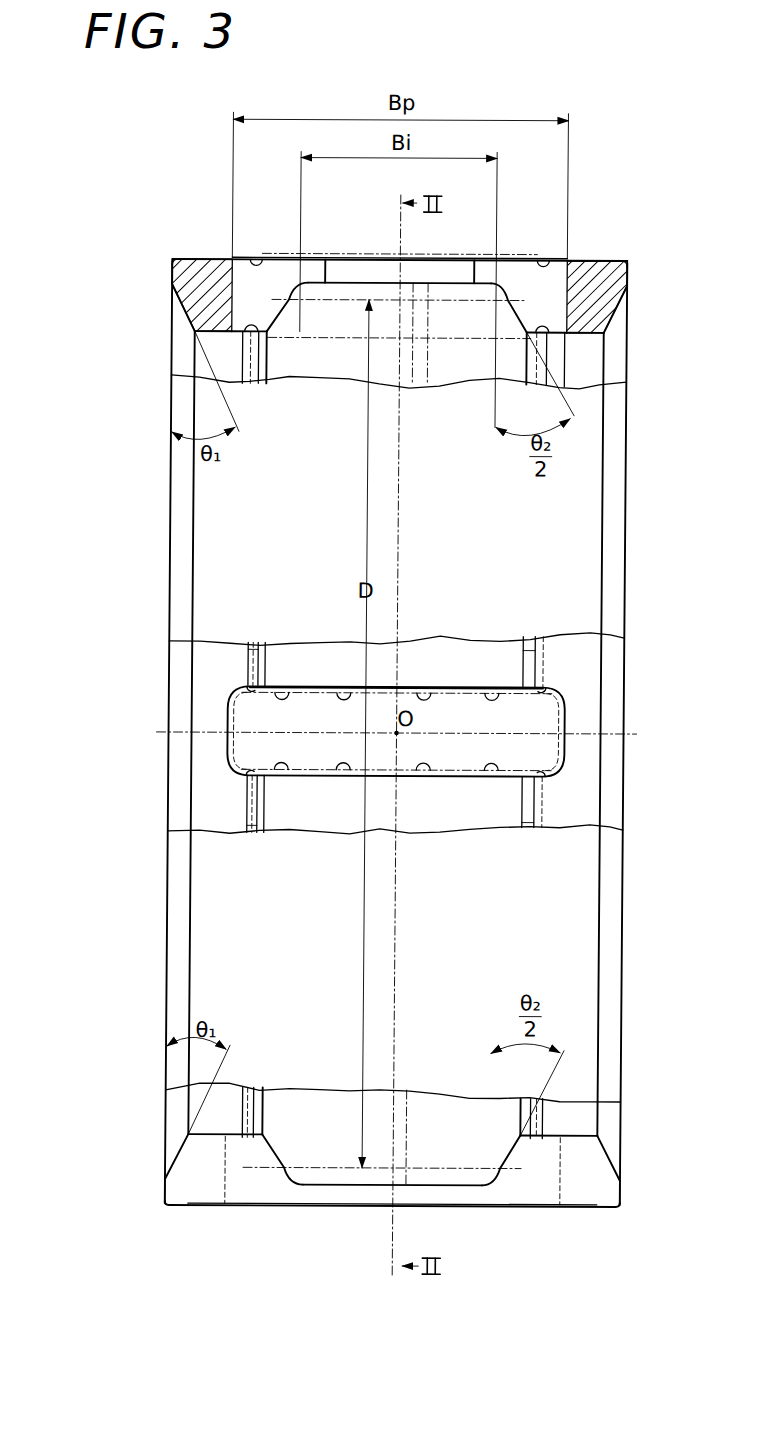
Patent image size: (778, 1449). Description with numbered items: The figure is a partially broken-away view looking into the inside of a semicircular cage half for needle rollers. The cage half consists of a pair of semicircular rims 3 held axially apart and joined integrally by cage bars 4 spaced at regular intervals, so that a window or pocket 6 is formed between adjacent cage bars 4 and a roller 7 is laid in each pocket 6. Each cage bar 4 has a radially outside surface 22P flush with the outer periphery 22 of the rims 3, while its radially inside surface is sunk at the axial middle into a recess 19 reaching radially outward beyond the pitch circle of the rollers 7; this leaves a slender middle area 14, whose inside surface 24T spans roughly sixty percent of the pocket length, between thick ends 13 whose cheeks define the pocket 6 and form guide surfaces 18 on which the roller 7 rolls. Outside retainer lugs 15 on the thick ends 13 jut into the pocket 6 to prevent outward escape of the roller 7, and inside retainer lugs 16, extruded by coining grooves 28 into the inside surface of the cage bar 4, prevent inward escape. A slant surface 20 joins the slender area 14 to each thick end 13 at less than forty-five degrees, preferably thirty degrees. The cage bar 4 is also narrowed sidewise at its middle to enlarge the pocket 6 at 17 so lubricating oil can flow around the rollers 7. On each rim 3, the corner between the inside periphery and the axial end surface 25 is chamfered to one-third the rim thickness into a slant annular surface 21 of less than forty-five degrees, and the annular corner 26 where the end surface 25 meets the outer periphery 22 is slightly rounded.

The semicircular rim 3 is at (205, 295).
The cage bar 4 is at (572, 338).
The pocket 6 is at (481, 270).
The roller 7 is at (330, 380).
The thick end 13 is at (226, 338).
The slender area 14 is at (341, 276).
The outside retainer lug 15 is at (256, 258).
The inside retainer lug 16 is at (252, 345).
The widthwise enlargement of the pocket 17 is at (354, 300).
The guide surface 18 is at (264, 682).
The recess 19 is at (447, 308).
The slant surface 20 is at (284, 320).
The slant annular surface 21 is at (186, 316).
The outer periphery 22 is at (208, 256).
The radially outside surface of the cage bar 22P is at (284, 256).
The inside surface of the slender area 24T is at (413, 390).
The axial end surface 25 is at (170, 274).
The annular corner 26 is at (168, 261).
The groove 28 is at (543, 660).